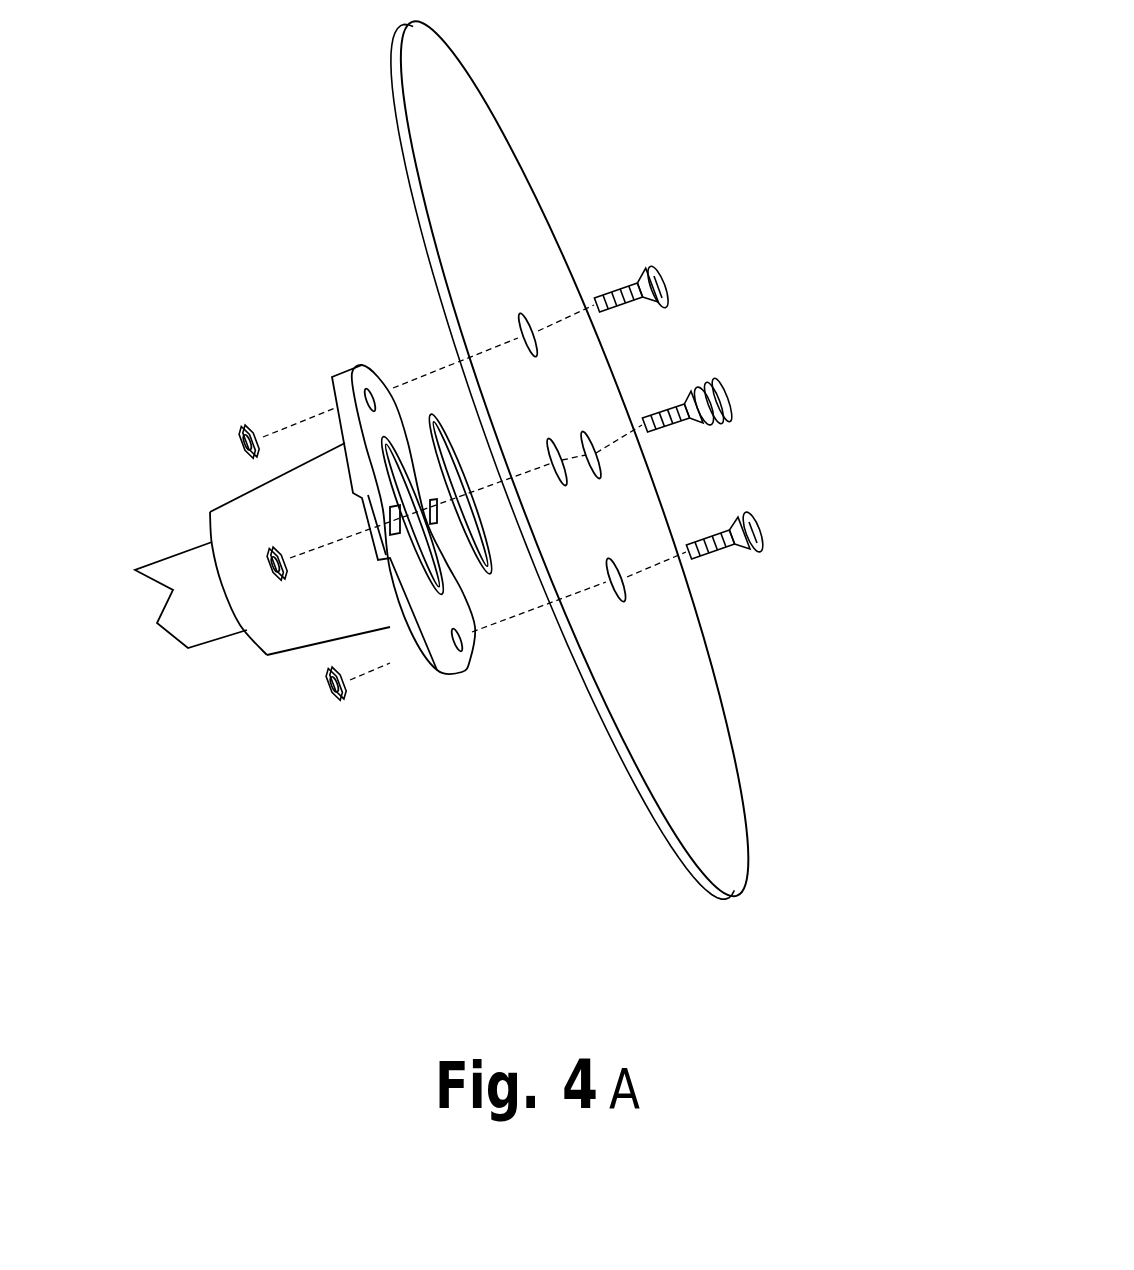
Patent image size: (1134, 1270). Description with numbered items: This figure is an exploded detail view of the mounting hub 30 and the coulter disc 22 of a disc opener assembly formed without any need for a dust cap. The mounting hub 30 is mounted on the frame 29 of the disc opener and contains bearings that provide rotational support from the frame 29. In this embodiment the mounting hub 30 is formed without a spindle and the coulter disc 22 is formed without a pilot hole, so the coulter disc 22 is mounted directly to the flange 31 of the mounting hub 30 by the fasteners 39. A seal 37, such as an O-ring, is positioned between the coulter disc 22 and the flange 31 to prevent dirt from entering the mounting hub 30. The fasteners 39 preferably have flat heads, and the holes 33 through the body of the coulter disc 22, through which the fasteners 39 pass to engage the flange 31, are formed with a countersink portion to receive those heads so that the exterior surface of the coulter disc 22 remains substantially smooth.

The coulter disc 22 is at (470, 138).
The frame 29 is at (185, 556).
The mounting hub 30 is at (260, 610).
The flange 31 is at (438, 660).
The holes 33 is at (530, 310).
The seal 37 is at (500, 583).
The fasteners 39 is at (685, 305).